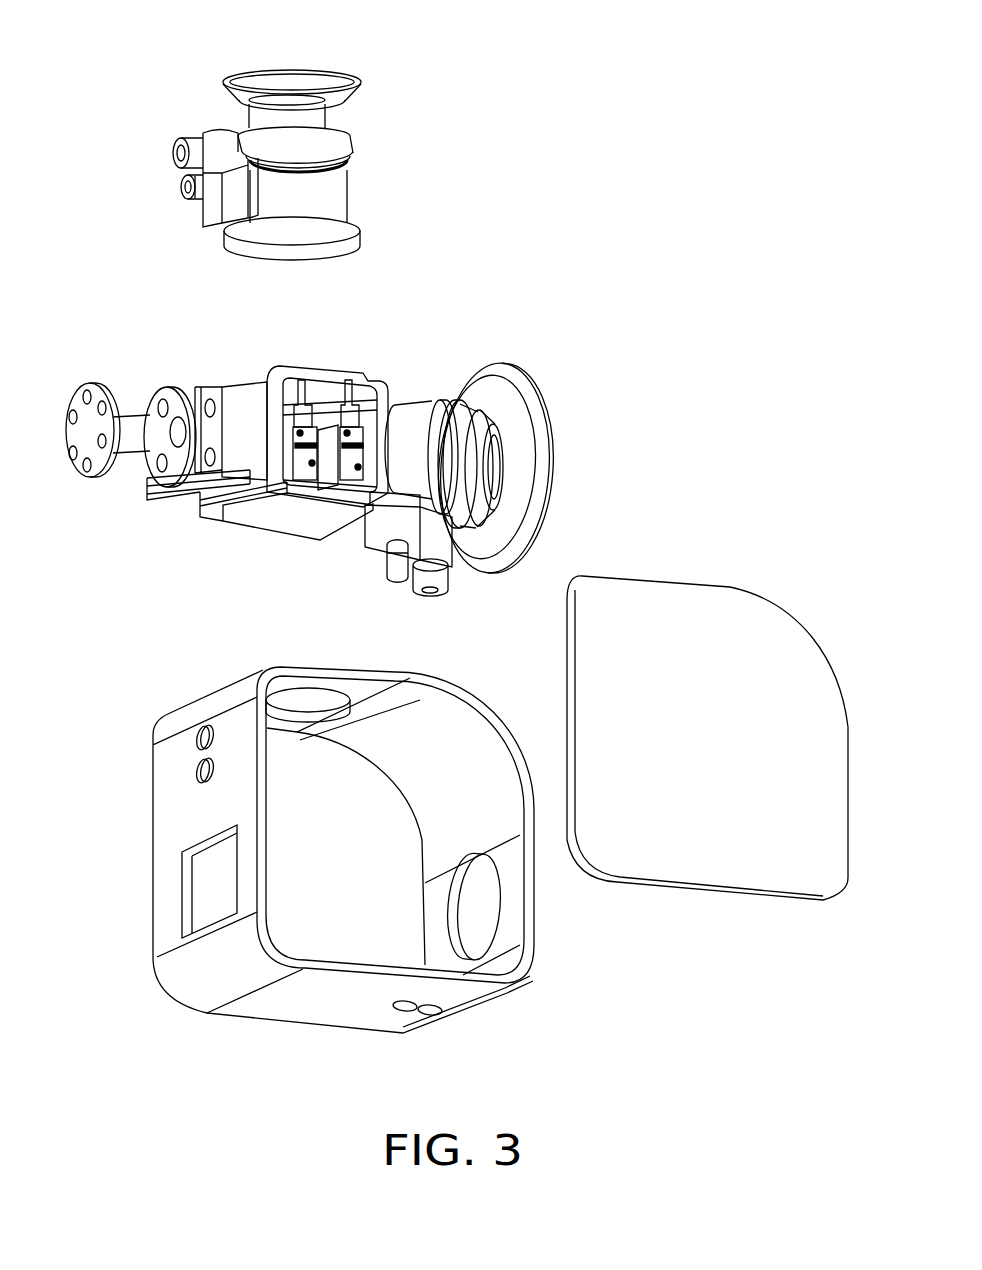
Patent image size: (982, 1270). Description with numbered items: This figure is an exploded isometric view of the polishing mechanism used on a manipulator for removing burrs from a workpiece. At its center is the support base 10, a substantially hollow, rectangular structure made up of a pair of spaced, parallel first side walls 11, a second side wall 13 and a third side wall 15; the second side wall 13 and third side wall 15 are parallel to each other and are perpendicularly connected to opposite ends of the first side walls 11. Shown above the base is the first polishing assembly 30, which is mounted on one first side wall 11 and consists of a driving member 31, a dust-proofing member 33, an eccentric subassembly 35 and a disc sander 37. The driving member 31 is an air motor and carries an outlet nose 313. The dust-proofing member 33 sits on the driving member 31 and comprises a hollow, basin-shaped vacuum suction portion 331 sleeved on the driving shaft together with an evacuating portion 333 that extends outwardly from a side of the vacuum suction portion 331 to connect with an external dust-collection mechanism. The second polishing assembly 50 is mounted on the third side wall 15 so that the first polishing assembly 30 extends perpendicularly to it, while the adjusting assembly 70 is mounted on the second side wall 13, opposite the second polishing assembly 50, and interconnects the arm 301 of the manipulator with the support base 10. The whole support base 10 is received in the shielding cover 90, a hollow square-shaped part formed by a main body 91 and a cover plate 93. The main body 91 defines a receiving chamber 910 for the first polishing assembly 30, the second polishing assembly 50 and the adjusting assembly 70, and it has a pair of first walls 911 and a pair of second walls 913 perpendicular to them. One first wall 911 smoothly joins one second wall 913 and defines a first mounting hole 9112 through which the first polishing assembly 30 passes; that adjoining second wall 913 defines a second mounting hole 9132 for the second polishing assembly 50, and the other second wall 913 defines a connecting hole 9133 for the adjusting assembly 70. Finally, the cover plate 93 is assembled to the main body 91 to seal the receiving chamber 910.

The support base 10 is at (438, 347).
The first side walls 11 is at (322, 367).
The second side wall 13 is at (228, 397).
The third side wall 15 is at (393, 433).
The first polishing assembly 30 is at (436, 45).
The driving member 31 is at (333, 203).
The dust-proofing member 33 is at (343, 155).
The eccentric subassembly 35 is at (313, 120).
The disc sander 37 is at (338, 83).
The arm 301 is at (83, 403).
The outlet nose 313 is at (197, 197).
The vacuum suction portion 331 is at (248, 135).
The evacuating portion 333 is at (187, 162).
The second polishing assembly 50 is at (497, 457).
The adjusting assembly 70 is at (232, 380).
The shielding cover 90 is at (725, 967).
The main body 91 is at (548, 988).
The cover plate 93 is at (712, 870).
The receiving chamber 910 is at (323, 927).
The first walls 911 is at (407, 703).
The second walls 913 is at (175, 807).
The first mounting hole 9112 is at (303, 698).
The second mounting hole 9132 is at (480, 903).
The connecting hole 9133 is at (198, 900).